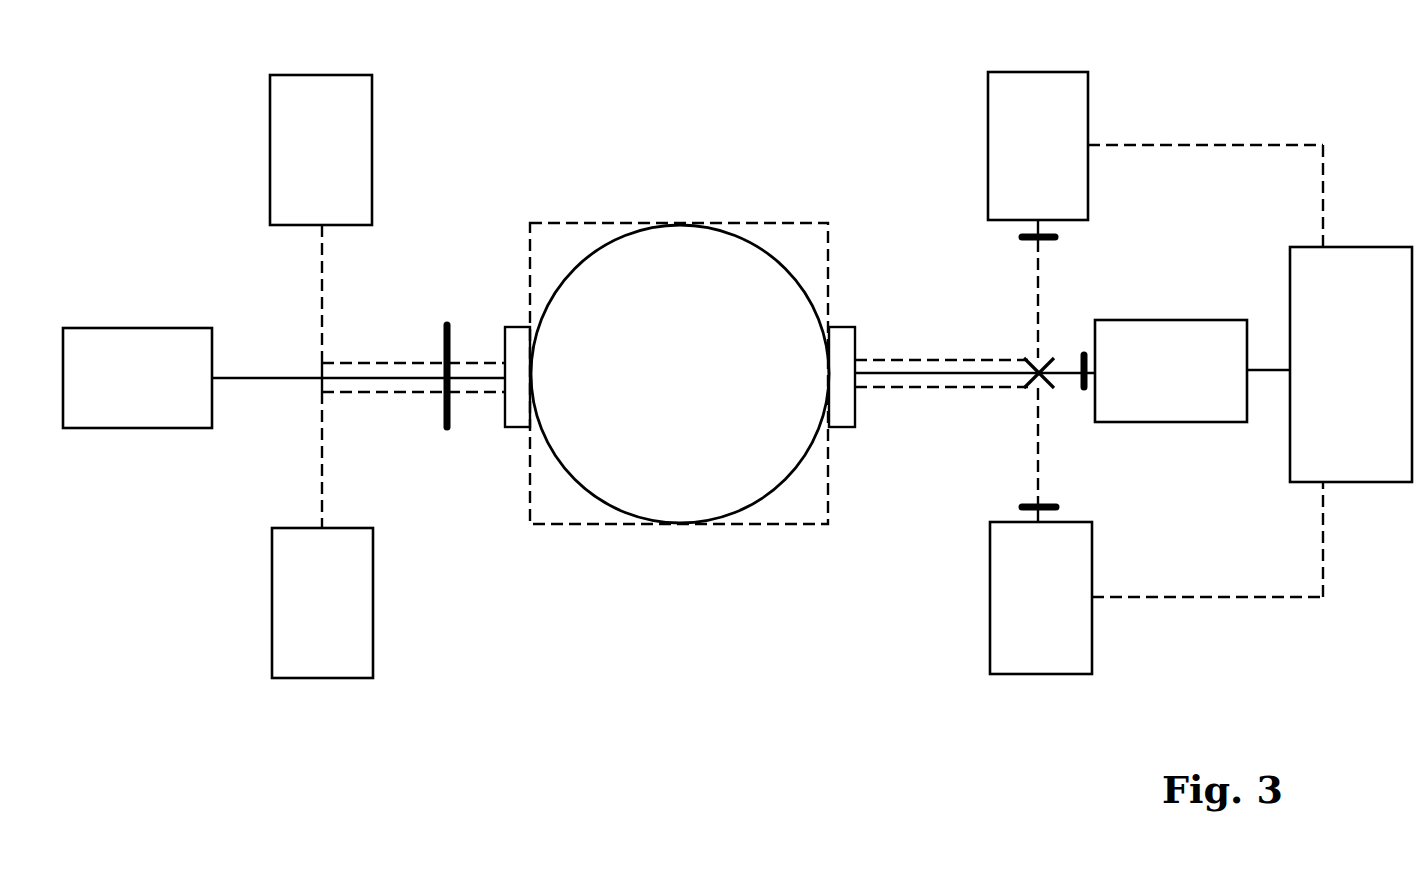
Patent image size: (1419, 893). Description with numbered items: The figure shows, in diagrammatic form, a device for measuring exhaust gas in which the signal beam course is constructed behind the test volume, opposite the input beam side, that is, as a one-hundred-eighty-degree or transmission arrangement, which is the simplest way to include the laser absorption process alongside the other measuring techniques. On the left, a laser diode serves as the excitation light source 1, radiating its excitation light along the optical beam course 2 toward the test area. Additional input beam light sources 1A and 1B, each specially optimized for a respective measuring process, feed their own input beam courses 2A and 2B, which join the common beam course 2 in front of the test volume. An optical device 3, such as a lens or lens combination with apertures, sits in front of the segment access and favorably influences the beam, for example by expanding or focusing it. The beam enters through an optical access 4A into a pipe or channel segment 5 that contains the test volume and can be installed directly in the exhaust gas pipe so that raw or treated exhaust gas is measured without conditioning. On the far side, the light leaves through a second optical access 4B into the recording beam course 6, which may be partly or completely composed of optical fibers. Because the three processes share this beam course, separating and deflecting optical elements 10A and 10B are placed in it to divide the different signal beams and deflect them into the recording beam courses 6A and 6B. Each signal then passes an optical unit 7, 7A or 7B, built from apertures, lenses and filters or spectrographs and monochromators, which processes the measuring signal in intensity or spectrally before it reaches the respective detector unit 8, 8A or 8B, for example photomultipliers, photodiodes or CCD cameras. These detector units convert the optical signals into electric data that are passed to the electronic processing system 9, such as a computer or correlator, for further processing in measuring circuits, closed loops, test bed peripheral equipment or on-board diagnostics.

The excitation light source 1 is at (137, 359).
The input beam light source 1A is at (345, 150).
The input beam light source 1B is at (347, 603).
The optical beam course 2 is at (358, 364).
The input beam course 2A is at (346, 294).
The input beam course 2B is at (346, 460).
The optical device 3 is at (446, 353).
The optical access 4A is at (522, 417).
The optical access 4B is at (843, 423).
The pipe or channel segment 5 is at (753, 240).
The recording beam course 6 is at (975, 351).
The recording beam course 6A is at (1011, 289).
The recording beam course 6B is at (1012, 455).
The optical unit 7 is at (1085, 350).
The optical element 7A is at (1062, 243).
The optical element 7B is at (1063, 501).
The detector unit 8 is at (1192, 391).
The detector unit 8A is at (1155, 142).
The detector unit 8B is at (1156, 599).
The electronic processing system 9 is at (1338, 365).
The separating and deflecting optical element 10A is at (1049, 361).
The separating and deflecting optical element 10B is at (1049, 384).